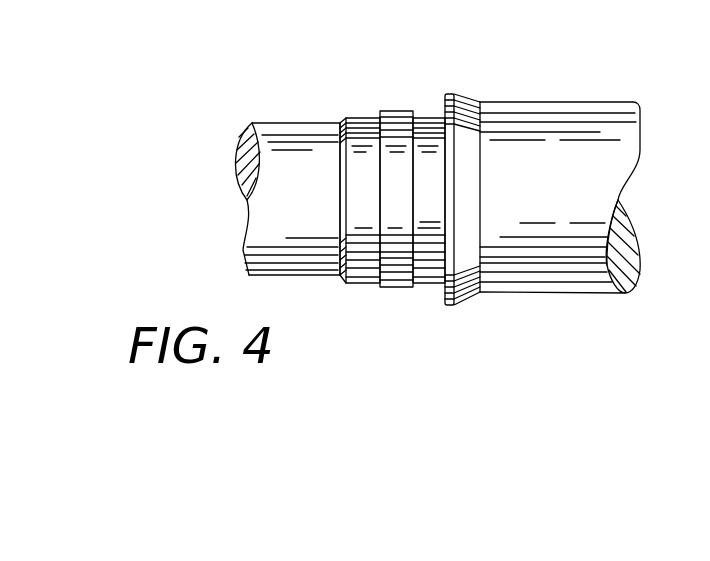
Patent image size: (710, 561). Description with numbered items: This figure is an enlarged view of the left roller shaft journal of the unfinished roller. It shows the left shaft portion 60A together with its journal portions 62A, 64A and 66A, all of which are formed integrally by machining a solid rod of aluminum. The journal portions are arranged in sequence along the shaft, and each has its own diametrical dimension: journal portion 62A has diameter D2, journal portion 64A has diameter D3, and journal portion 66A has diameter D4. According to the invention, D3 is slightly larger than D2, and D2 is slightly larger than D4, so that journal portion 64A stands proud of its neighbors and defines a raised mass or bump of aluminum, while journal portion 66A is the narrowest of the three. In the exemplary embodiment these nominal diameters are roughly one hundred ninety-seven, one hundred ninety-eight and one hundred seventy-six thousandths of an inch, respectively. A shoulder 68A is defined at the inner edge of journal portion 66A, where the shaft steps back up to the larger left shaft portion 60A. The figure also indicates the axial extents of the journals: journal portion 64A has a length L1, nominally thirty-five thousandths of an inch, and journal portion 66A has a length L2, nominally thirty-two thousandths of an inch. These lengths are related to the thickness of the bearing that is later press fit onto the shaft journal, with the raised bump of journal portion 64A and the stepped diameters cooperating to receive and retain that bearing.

The left shaft portion 60A is at (592, 103).
The journal portion 62A is at (364, 113).
The journal portion 64A is at (397, 109).
The journal portion 66A is at (430, 113).
The shoulder 68A is at (440, 99).
The diametrical dimension D2 is at (362, 285).
The diametrical dimension D3 is at (397, 289).
The diametrical dimension D4 is at (427, 285).
The length L1 is at (380, 290).
The length L2 is at (442, 306).